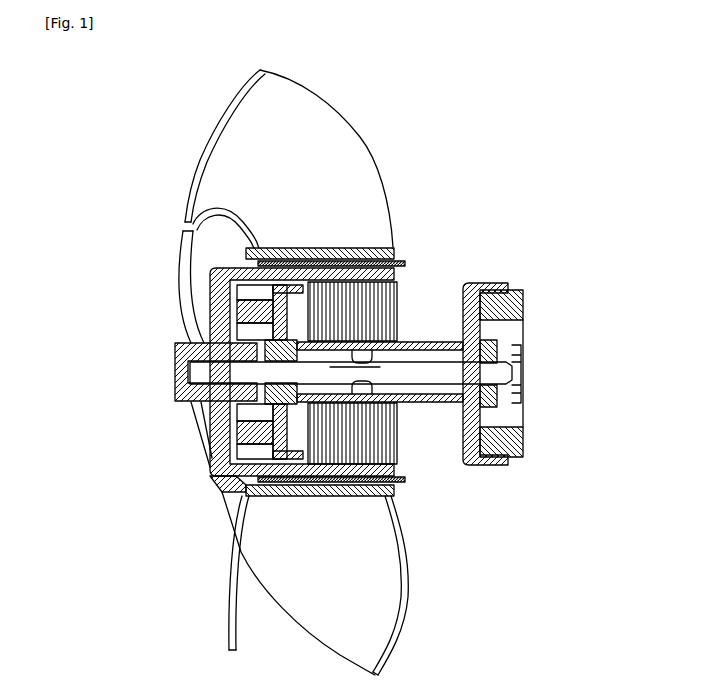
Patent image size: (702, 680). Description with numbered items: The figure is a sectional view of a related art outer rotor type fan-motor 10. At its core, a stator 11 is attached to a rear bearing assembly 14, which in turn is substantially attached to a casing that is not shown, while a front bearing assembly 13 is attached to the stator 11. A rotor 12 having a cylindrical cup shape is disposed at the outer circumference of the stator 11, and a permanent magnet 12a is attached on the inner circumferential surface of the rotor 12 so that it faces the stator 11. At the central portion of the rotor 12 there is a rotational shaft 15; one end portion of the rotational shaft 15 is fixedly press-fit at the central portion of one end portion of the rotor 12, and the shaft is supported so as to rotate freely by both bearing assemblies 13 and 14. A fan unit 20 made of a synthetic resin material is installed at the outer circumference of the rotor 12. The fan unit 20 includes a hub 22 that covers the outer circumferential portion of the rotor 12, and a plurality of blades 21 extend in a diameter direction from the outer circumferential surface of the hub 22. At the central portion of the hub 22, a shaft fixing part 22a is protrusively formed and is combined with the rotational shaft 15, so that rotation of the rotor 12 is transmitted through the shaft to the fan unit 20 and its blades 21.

The outer rotor type fan-motor 10 is at (221, 491).
The stator 11 is at (378, 310).
The rotor 12 is at (212, 290).
The permanent magnet 12a is at (380, 257).
The front bearing assembly 13 is at (208, 405).
The rear bearing assembly 14 is at (497, 350).
The rotational shaft 15 is at (174, 351).
The fan unit 20 is at (203, 118).
The blades 21 is at (343, 160).
The hub 22 is at (210, 450).
The shaft fixing part 22a is at (175, 371).